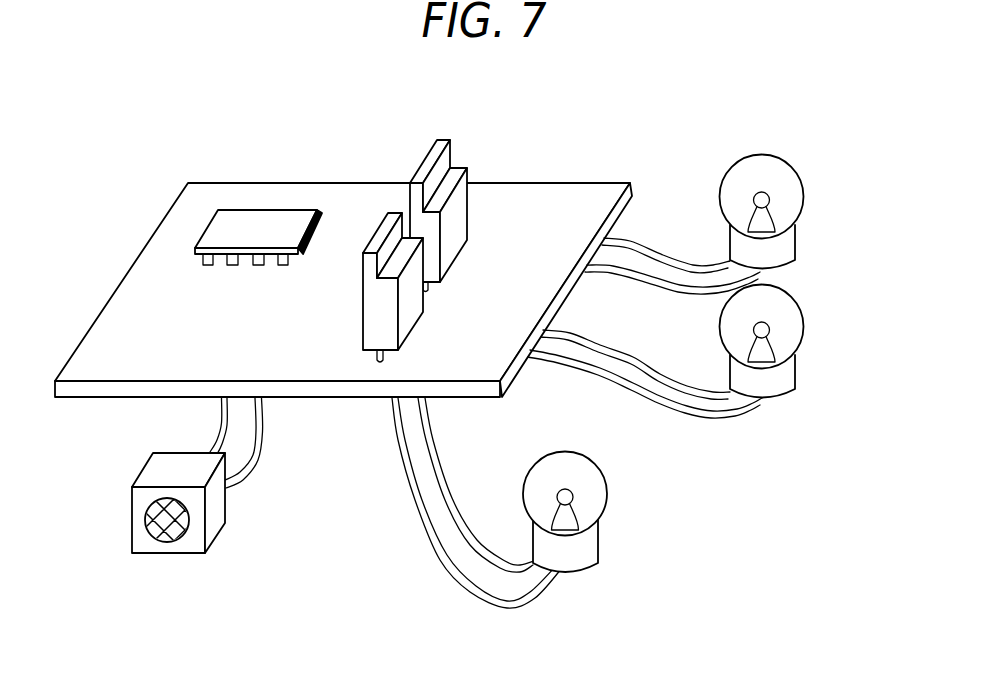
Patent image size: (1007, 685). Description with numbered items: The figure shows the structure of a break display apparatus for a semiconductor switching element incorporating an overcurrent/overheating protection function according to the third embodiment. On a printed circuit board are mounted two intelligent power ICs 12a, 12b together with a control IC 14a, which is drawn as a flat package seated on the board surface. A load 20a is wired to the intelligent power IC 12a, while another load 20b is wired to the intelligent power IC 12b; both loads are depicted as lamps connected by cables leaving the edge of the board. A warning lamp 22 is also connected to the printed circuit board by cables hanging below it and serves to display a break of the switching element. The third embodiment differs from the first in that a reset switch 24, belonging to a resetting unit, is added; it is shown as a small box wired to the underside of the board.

The intelligent power IC 12a is at (468, 216).
The intelligent power IC 12b is at (418, 327).
The control IC 14a is at (270, 220).
The load 20a is at (803, 192).
The load 20b is at (803, 315).
The warning lamp 22 is at (608, 490).
The reset switch 24 is at (218, 537).